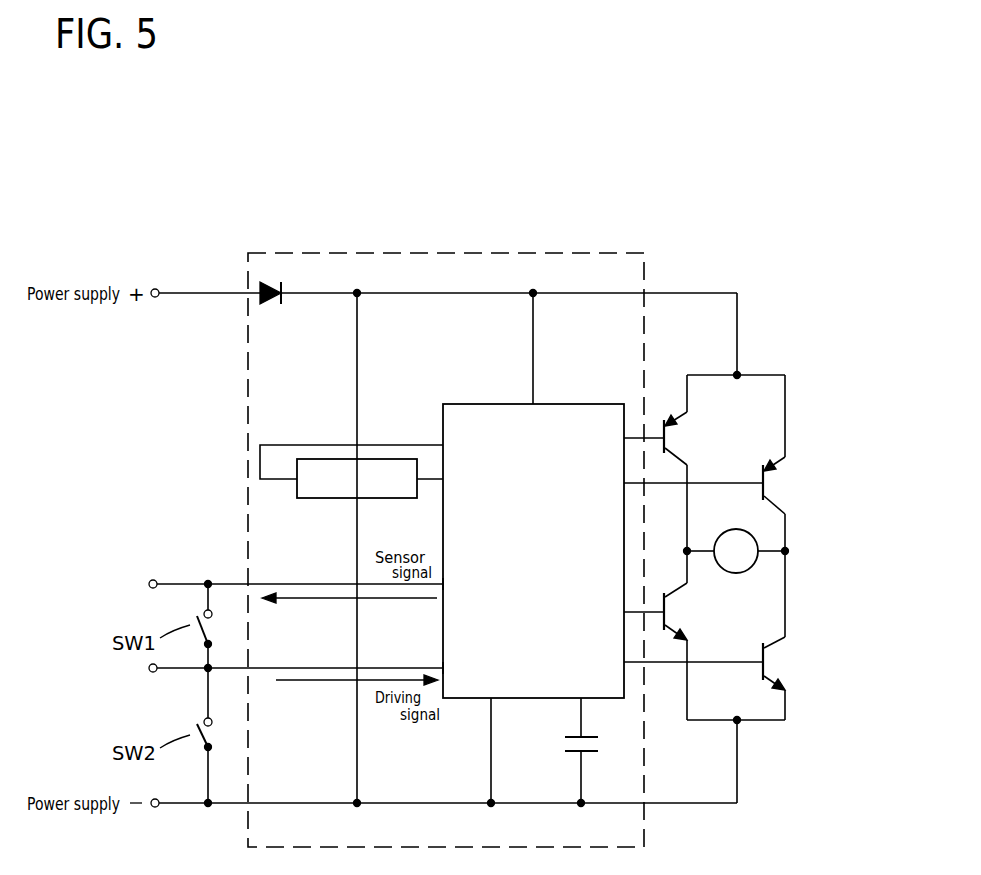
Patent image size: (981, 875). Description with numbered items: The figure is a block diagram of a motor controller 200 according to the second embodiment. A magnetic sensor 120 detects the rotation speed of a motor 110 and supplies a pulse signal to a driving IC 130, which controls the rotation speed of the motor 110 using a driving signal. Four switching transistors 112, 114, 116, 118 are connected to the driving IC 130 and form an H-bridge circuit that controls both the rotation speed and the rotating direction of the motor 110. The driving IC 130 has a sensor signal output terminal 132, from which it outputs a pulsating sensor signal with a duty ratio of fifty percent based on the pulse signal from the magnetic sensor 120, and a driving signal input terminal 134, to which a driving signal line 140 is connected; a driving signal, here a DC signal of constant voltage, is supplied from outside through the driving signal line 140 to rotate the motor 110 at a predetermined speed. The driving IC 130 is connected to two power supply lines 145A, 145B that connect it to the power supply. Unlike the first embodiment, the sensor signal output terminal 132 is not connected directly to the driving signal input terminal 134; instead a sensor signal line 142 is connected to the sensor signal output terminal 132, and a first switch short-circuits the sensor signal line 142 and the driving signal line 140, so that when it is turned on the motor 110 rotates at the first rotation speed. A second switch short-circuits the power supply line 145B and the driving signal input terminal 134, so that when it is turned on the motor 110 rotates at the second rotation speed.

The motor controller 200 is at (293, 189).
The power supply line 145A is at (183, 293).
The power supply line 145B is at (177, 807).
The sensor signal line 142 is at (272, 582).
The driving signal line 140 is at (278, 666).
The magnetic sensor 120 is at (372, 499).
The driving IC 130 is at (467, 412).
The sensor signal output terminal 132 is at (445, 580).
The driving signal input terminal 134 is at (445, 666).
The switching transistor 112 is at (672, 444).
The switching transistor 114 is at (776, 490).
The switching transistor 116 is at (672, 618).
The switching transistor 118 is at (776, 670).
The motor 110 is at (757, 545).